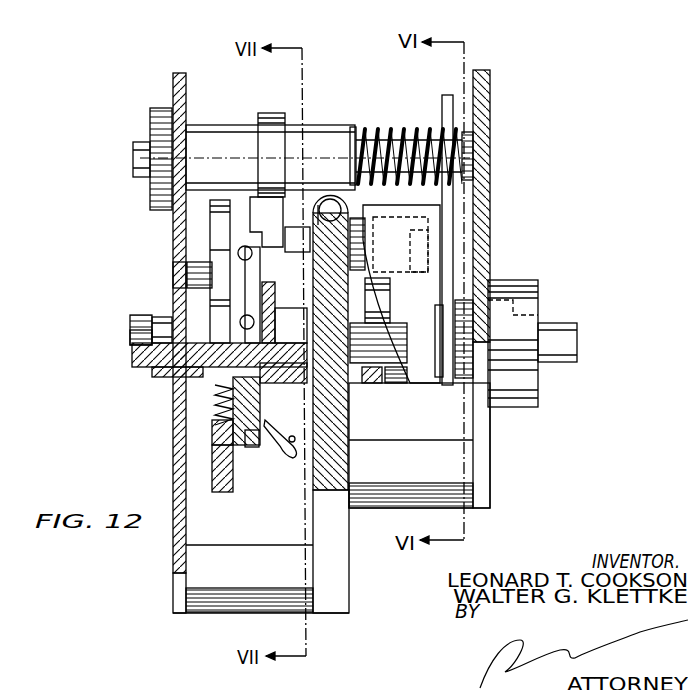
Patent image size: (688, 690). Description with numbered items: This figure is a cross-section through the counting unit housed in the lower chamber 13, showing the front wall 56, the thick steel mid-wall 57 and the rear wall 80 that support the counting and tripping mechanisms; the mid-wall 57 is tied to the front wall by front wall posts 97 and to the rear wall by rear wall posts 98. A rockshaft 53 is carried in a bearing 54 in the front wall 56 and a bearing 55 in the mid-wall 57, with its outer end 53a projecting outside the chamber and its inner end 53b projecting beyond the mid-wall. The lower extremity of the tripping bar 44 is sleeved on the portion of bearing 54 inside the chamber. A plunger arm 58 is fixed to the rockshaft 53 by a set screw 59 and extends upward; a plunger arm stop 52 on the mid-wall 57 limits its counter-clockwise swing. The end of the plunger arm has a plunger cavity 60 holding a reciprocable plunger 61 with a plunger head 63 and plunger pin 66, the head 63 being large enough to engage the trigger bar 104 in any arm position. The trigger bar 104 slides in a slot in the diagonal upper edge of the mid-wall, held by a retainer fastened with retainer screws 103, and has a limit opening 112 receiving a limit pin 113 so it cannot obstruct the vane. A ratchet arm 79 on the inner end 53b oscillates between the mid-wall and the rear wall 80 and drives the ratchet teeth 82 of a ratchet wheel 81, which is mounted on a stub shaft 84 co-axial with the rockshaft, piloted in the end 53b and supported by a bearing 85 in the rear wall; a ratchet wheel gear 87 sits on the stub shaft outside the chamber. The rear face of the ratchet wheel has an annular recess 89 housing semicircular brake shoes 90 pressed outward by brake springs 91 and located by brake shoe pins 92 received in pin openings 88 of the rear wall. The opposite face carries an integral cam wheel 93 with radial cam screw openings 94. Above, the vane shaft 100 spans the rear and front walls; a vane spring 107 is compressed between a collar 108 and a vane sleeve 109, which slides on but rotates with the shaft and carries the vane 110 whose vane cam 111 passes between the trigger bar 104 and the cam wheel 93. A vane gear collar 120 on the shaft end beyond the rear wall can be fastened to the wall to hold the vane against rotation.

The lower chamber 13 is at (540, 130).
The tripping bar 44 is at (447, 95).
The plunger arm stop 52 is at (360, 293).
The rockshaft 53 is at (382, 383).
The outer end of rockshaft 53a is at (563, 330).
The inner end of rockshaft 53b is at (284, 312).
The bearing 54 is at (513, 278).
The bearing 55 is at (353, 383).
The front wall 56 is at (478, 453).
The mid-wall 57 is at (333, 602).
The plunger arm 58 is at (430, 383).
The set screw 59 is at (397, 383).
The plunger cavity 60 is at (415, 223).
The plunger 61 is at (398, 235).
The plunger head 63 is at (357, 233).
The plunger pin 66 is at (440, 237).
The ratchet arm 79 is at (283, 455).
The rear wall 80 is at (180, 588).
The ratchet wheel 81 is at (218, 492).
The ratchet teeth 82 is at (220, 233).
The stub shaft 84 is at (163, 377).
The bearing 85 is at (165, 318).
The ratchet wheel gear 87 is at (140, 332).
The pin openings 88 is at (177, 277).
The annular recess 89 is at (228, 462).
The brake shoes 90 is at (213, 443).
The brake springs 91 is at (215, 400).
The brake shoe pins 92 is at (197, 267).
The cam wheel 93 is at (237, 302).
The cam screw openings 94 is at (252, 268).
The front wall posts 97 is at (435, 457).
The rear wall posts 98 is at (282, 561).
The vane shaft 100 is at (400, 133).
The retainer screws 103 is at (332, 200).
The trigger bar 104 is at (304, 200).
The vane spring 107 is at (428, 125).
The collar 108 is at (473, 138).
The vane sleeve 109 is at (220, 138).
The vane 110 is at (273, 130).
The vane cam 111 is at (255, 205).
The limit opening 112 is at (320, 205).
The limit pin 113 is at (340, 205).
The vane gear collar 120 is at (157, 128).